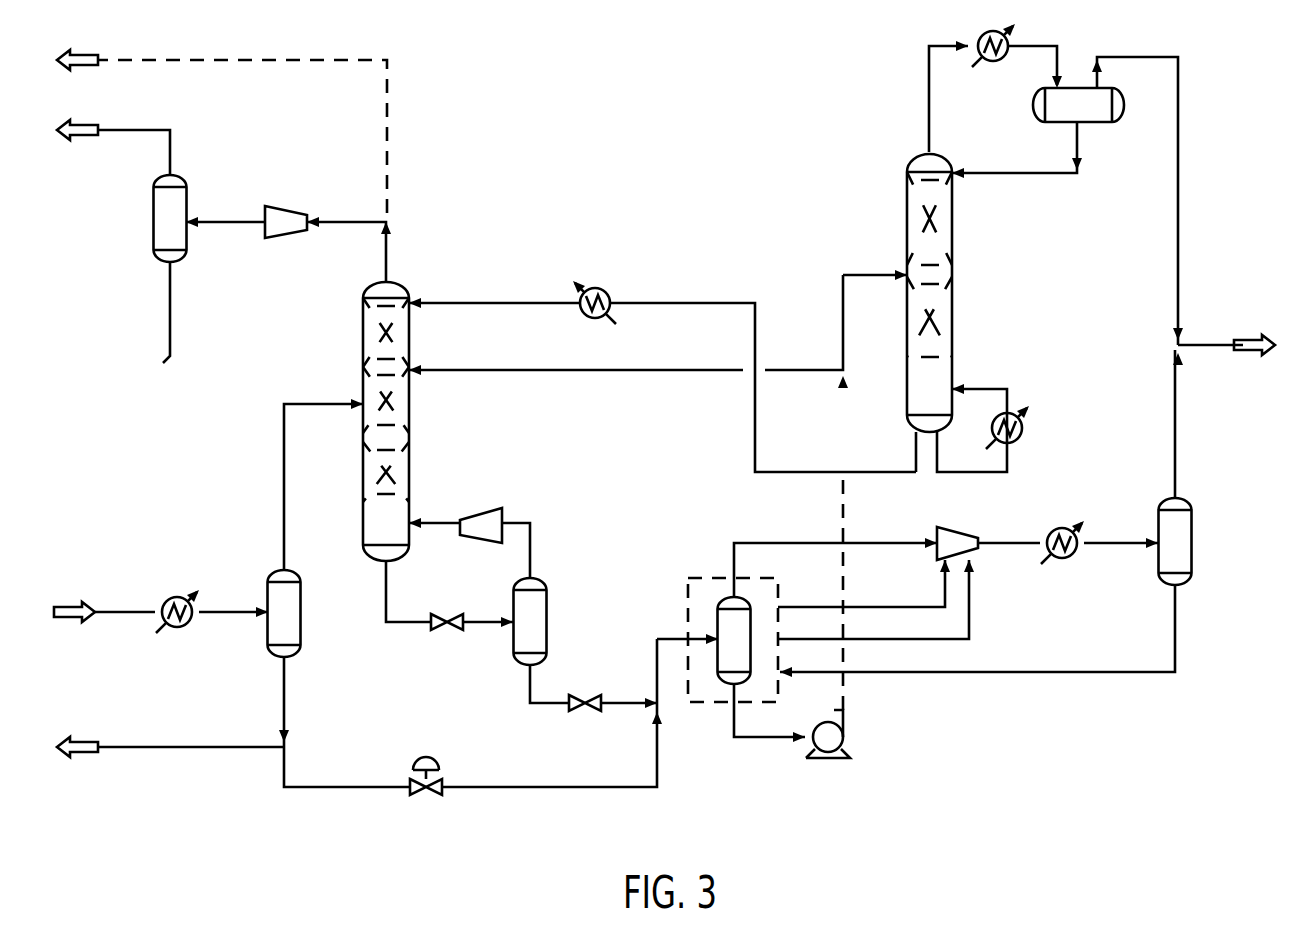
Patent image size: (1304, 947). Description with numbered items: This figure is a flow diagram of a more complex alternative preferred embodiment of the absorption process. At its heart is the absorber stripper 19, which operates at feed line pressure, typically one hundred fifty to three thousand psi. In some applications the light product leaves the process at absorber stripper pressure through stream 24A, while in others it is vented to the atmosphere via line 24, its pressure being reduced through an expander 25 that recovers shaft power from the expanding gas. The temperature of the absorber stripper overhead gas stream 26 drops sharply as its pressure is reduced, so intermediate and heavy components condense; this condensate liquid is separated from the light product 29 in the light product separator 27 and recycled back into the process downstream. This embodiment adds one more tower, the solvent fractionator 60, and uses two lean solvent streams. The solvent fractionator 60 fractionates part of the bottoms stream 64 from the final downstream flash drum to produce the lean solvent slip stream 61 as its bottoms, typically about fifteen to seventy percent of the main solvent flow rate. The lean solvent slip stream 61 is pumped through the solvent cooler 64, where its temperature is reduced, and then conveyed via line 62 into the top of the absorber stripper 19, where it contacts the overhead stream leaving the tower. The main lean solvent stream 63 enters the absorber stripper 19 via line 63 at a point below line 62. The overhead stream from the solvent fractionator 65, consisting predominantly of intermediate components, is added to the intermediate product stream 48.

The absorber stripper 19 is at (410, 460).
The line 24 is at (351, 222).
The stream 24A is at (301, 58).
The expander 25 is at (288, 207).
The absorber stripper overhead gas stream 26 is at (229, 222).
The light product separator 27 is at (153, 222).
The light product 29 is at (132, 130).
The solvent fractionator 60 is at (952, 258).
The lean solvent slip stream 61 is at (692, 300).
The slip lean solvent stream line 62 is at (508, 300).
The main lean solvent stream 63 is at (580, 372).
The solvent cooler 64 is at (600, 288).
The overhead stream from the solvent fractionator 65 is at (1178, 201).
The intermediate product stream 48 is at (1214, 345).